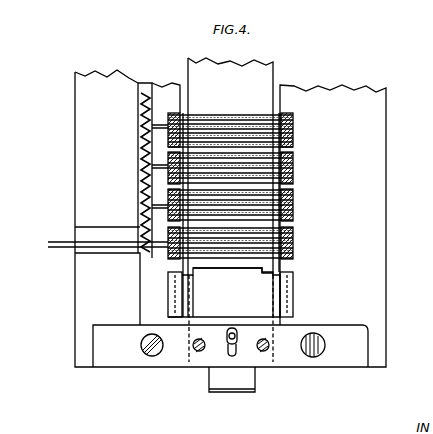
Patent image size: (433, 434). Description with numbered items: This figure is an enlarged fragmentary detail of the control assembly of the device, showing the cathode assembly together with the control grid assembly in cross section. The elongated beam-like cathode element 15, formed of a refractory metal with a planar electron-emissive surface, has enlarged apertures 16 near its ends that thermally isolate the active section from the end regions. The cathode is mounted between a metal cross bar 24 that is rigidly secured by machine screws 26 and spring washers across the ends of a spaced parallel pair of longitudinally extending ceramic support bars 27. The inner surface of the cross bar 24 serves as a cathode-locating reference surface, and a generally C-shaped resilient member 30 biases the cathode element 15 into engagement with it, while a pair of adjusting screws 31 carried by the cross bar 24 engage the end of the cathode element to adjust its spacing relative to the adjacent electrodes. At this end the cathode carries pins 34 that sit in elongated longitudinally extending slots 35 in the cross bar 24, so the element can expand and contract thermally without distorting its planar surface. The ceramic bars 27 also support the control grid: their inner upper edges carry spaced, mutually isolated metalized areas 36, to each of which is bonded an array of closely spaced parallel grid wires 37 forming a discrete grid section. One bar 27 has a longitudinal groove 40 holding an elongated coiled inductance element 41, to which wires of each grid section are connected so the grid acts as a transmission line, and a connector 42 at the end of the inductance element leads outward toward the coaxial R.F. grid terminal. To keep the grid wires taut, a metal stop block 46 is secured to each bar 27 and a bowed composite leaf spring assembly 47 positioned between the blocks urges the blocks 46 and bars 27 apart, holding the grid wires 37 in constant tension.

The cathode element 15 is at (275, 72).
The apertures 16 is at (272, 270).
The cross bar 24 is at (108, 352).
The machine screws 26 is at (152, 358).
The ceramic support bars 27 is at (370, 283).
The resilient member 30 is at (215, 395).
The adjusting screws 31 is at (200, 353).
The pins 34 is at (231, 328).
The slots 35 is at (235, 358).
The metalized areas 36 is at (170, 142).
The grid wires 37 is at (227, 123).
The groove 40 is at (145, 85).
The inductance element 41 is at (140, 105).
The connectors 42 is at (58, 243).
The stop block 46 is at (167, 285).
The leaf spring assembly 47 is at (262, 298).